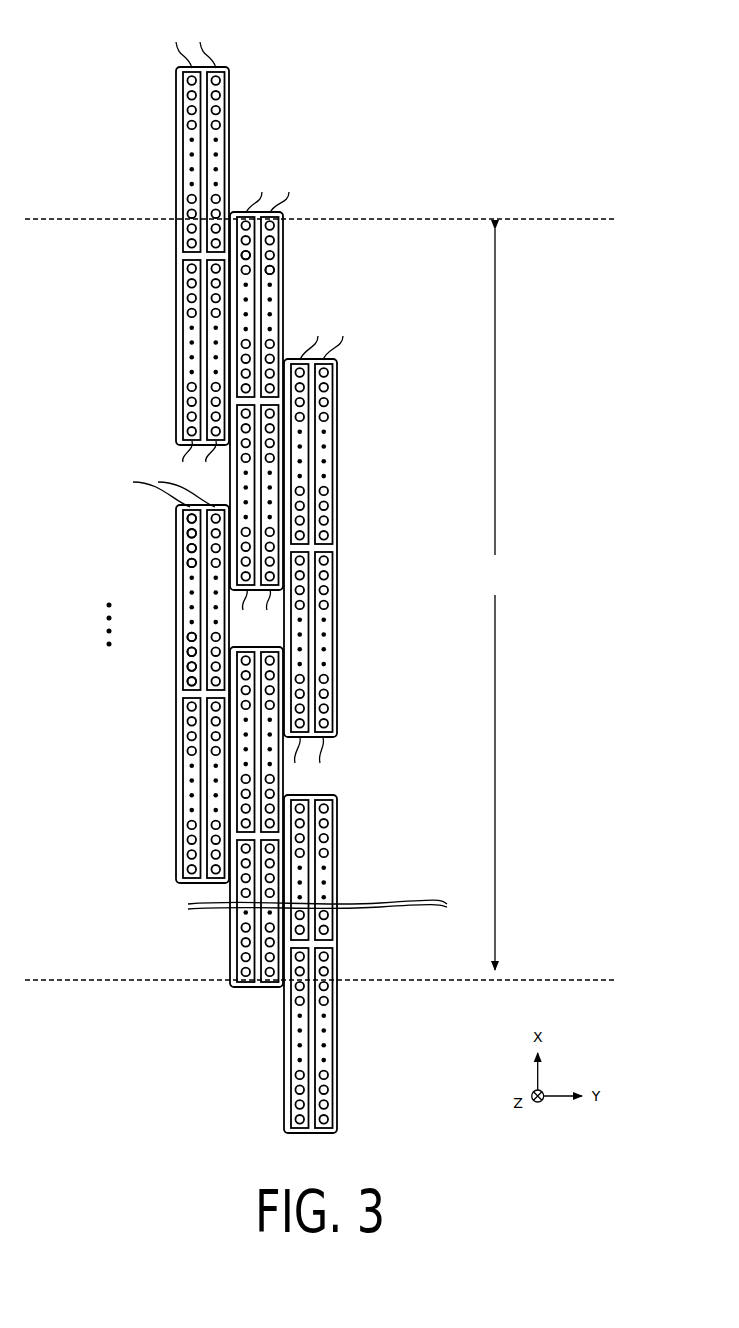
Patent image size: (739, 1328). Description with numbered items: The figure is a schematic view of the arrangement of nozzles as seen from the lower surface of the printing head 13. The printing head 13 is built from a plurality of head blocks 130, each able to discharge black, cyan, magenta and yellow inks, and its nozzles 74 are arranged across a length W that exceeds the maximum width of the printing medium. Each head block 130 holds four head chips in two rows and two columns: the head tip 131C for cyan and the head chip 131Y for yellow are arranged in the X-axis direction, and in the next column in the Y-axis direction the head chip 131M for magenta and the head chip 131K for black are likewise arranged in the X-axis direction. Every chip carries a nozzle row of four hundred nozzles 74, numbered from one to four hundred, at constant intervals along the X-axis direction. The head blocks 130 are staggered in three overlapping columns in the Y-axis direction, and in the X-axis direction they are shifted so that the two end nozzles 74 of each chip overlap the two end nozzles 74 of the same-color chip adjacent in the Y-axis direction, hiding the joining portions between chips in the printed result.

The printing head 13 is at (378, 64).
The nozzle 74 is at (249, 256).
The head block 130 is at (176, 800).
The head chip 131M is at (301, 450).
The head chip 131Y is at (325, 466).
The head chip 131K is at (302, 640).
The head tip 131C is at (327, 655).
The length W is at (497, 599).